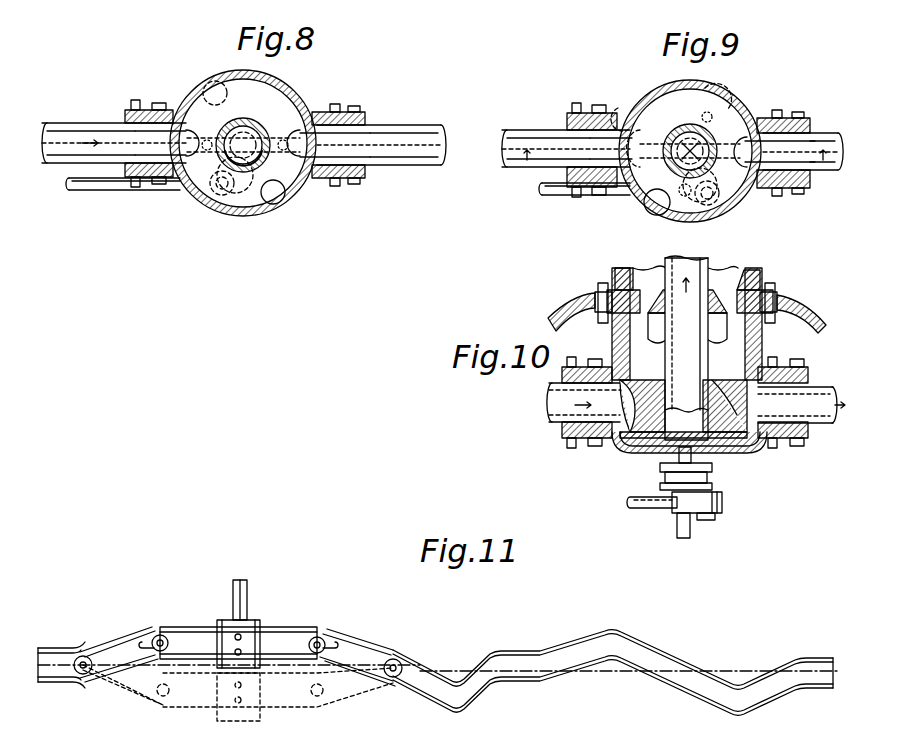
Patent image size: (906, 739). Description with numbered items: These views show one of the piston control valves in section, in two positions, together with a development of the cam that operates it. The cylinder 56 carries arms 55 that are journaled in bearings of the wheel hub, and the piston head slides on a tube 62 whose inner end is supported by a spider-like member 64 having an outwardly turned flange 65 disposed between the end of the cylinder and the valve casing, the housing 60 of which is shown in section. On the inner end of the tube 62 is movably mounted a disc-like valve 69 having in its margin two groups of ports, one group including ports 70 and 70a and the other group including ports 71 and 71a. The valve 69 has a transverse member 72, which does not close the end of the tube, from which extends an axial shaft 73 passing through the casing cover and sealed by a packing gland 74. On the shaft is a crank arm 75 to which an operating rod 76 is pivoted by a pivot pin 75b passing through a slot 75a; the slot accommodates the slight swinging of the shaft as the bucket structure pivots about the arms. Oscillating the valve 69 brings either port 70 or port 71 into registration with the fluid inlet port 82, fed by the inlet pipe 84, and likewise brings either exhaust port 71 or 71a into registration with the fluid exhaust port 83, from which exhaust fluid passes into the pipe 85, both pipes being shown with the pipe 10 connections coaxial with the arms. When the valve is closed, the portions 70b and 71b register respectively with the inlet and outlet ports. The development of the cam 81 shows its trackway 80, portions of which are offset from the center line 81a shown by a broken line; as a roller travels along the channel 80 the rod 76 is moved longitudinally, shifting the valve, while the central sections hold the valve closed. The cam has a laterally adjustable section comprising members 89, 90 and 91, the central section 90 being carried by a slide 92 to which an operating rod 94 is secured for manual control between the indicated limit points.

In FIG. 9, the pipe 10 is at (527, 160).
In FIG. 10, the arms 55 is at (555, 317).
In FIG. 10, the cylinder 56 is at (617, 276).
In FIG. 10, the housing 60 is at (622, 275).
In FIG. 8, the tube 62 is at (238, 119).
In FIG. 9, the tube 62 is at (742, 181).
In FIG. 10, the tube 62 is at (708, 267).
In FIG. 10, the spider-like member 64 is at (740, 300).
In FIG. 10, the outwardly turned flange 65 is at (596, 306).
In FIG. 8, the valve 69 is at (282, 108).
In FIG. 9, the valve 69 is at (668, 103).
In FIG. 10, the valve 69 is at (720, 452).
In FIG. 8, the port 70 is at (188, 136).
In FIG. 9, the port 70 is at (653, 200).
In FIG. 8, the port 70a is at (211, 80).
In FIG. 9, the port 70a is at (640, 103).
In FIG. 10, the port 70a is at (632, 430).
In FIG. 8, the portion 70b is at (191, 111).
In FIG. 9, the portion 70b is at (635, 180).
In FIG. 8, the port 71 is at (309, 188).
In FIG. 9, the port 71 is at (735, 105).
In FIG. 8, the exhaust port 71a is at (272, 193).
In FIG. 9, the exhaust port 71a is at (748, 120).
In FIG. 10, the exhaust port 71a is at (745, 384).
In FIG. 8, the portion 71b is at (303, 196).
In FIG. 9, the portion 71b is at (757, 96).
In FIG. 8, the transverse member 72 is at (252, 162).
In FIG. 9, the transverse member 72 is at (702, 118).
In FIG. 10, the transverse member 72 is at (678, 420).
In FIG. 8, the axial shaft 73 is at (248, 122).
In FIG. 9, the axial shaft 73 is at (675, 141).
In FIG. 10, the axial shaft 73 is at (694, 526).
In FIG. 10, the packing gland 74 is at (712, 478).
In FIG. 8, the crank arm 75 is at (240, 212).
In FIG. 9, the crank arm 75 is at (735, 200).
In FIG. 10, the crank arm 75 is at (722, 510).
In FIG. 8, the slot 75a is at (232, 222).
In FIG. 9, the slot 75a is at (690, 210).
In FIG. 8, the pivot pin 75b is at (221, 197).
In FIG. 9, the pivot pin 75b is at (718, 202).
In FIG. 10, the pivot pin 75b is at (700, 533).
In FIG. 8, the operating rod 76 is at (100, 191).
In FIG. 9, the operating rod 76 is at (575, 196).
In FIG. 10, the operating rod 76 is at (648, 509).
In FIG. 11, the cam trackway 80 is at (614, 641).
In FIG. 11, the cam 81 is at (672, 642).
In FIG. 11, the center line 81a is at (508, 668).
In FIG. 8, the fluid inlet port 82 is at (176, 155).
In FIG. 9, the fluid inlet port 82 is at (622, 128).
In FIG. 10, the fluid inlet port 82 is at (612, 385).
In FIG. 8, the fluid exhaust port 83 is at (313, 136).
In FIG. 9, the fluid exhaust port 83 is at (760, 137).
In FIG. 10, the fluid exhaust port 83 is at (752, 430).
In FIG. 8, the inlet pipe 84 is at (80, 128).
In FIG. 9, the inlet pipe 84 is at (512, 128).
In FIG. 10, the inlet pipe 84 is at (562, 408).
In FIG. 8, the pipe 85 is at (393, 132).
In FIG. 9, the pipe 85 is at (823, 131).
In FIG. 10, the pipe 85 is at (812, 388).
In FIG. 11, the member 89 is at (108, 640).
In FIG. 11, the central section 90 is at (183, 630).
In FIG. 11, the member 91 is at (343, 632).
In FIG. 11, the slide 92 is at (257, 625).
In FIG. 11, the operating rod 94 is at (243, 582).